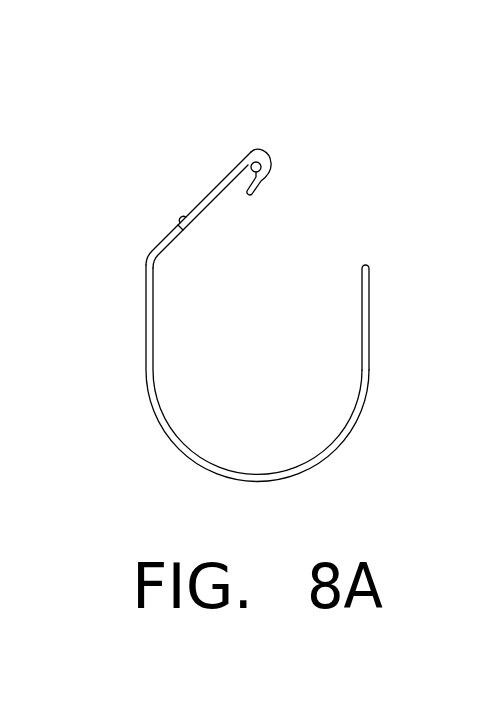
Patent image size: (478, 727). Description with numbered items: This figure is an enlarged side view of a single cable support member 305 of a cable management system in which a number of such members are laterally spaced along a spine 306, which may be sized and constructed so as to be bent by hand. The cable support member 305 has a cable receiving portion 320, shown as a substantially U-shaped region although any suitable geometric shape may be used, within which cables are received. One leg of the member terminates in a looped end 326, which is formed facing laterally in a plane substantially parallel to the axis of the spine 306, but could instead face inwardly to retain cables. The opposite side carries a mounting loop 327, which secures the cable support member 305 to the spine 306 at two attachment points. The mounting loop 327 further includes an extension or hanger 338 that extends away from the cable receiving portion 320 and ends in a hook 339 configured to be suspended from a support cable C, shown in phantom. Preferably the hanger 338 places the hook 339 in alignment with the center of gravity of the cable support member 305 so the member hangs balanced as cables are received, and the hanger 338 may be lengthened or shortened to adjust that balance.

The cable support member 305 is at (346, 196).
The cable receiving portion 320 is at (253, 380).
The looped end 326 is at (367, 285).
The hanger 338 is at (236, 167).
The mounting loop 327 is at (177, 236).
The spine 306 is at (169, 200).
The hook 339 is at (264, 157).
The support cable C is at (257, 156).